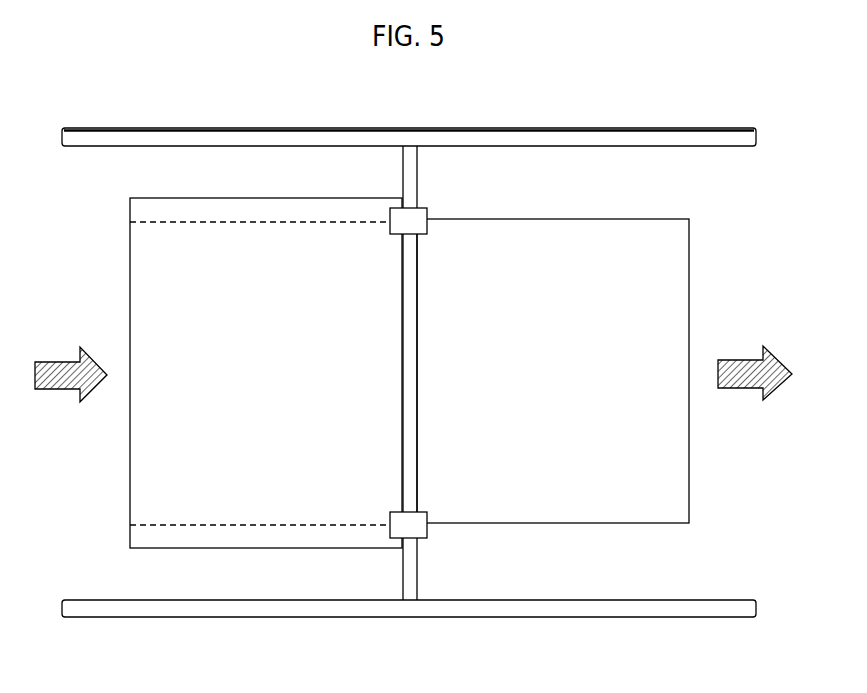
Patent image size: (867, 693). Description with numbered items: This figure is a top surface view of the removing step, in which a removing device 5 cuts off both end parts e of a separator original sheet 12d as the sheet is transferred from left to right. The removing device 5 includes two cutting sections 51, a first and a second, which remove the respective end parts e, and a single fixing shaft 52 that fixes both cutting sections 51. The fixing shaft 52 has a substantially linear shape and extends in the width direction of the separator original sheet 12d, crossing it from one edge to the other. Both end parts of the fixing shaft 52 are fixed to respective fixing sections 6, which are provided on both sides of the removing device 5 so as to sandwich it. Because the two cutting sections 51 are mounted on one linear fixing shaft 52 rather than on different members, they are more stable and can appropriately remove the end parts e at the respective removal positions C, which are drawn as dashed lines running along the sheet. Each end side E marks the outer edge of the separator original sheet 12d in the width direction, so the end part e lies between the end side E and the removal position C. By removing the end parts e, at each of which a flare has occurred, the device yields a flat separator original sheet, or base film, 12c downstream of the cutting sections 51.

The removing device 5 is at (428, 193).
The fixing section 6 is at (580, 147).
The separator original sheet (base film) 12c is at (689, 485).
The separator original sheet 12d is at (130, 485).
The cutting section 51 is at (428, 211).
The fixing shaft 52 is at (417, 373).
The end part (removal part) e is at (218, 205).
The removal position C is at (288, 222).
The end side E is at (344, 198).